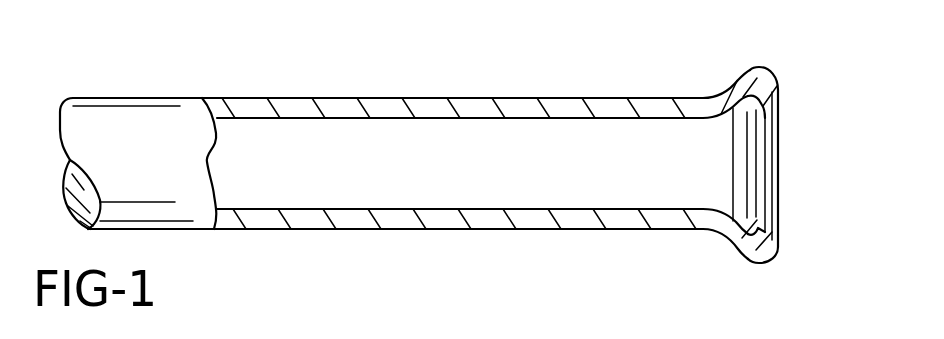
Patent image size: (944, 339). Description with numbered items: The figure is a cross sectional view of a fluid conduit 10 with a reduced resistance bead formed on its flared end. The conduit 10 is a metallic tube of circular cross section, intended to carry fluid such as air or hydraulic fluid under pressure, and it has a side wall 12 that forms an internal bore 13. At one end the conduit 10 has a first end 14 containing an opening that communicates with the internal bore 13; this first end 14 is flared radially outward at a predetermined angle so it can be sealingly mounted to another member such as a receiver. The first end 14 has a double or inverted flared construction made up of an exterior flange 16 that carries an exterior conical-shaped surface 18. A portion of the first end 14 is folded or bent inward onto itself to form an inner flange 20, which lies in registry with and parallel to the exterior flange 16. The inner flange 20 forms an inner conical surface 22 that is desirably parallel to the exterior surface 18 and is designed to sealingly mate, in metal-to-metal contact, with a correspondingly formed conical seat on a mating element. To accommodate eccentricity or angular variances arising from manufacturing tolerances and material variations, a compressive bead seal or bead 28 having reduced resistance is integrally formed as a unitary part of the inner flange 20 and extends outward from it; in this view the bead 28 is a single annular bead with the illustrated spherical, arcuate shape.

The fluid conduit 10 is at (372, 46).
The side wall 12 is at (272, 62).
The internal bore 13 is at (449, 118).
The first end 14 is at (751, 59).
The exterior flange 16 is at (731, 98).
The exterior conical-shaped surface 18 is at (733, 75).
The inner flange 20 is at (750, 261).
The inner conical surface 22 is at (778, 230).
The bead 28 is at (772, 216).